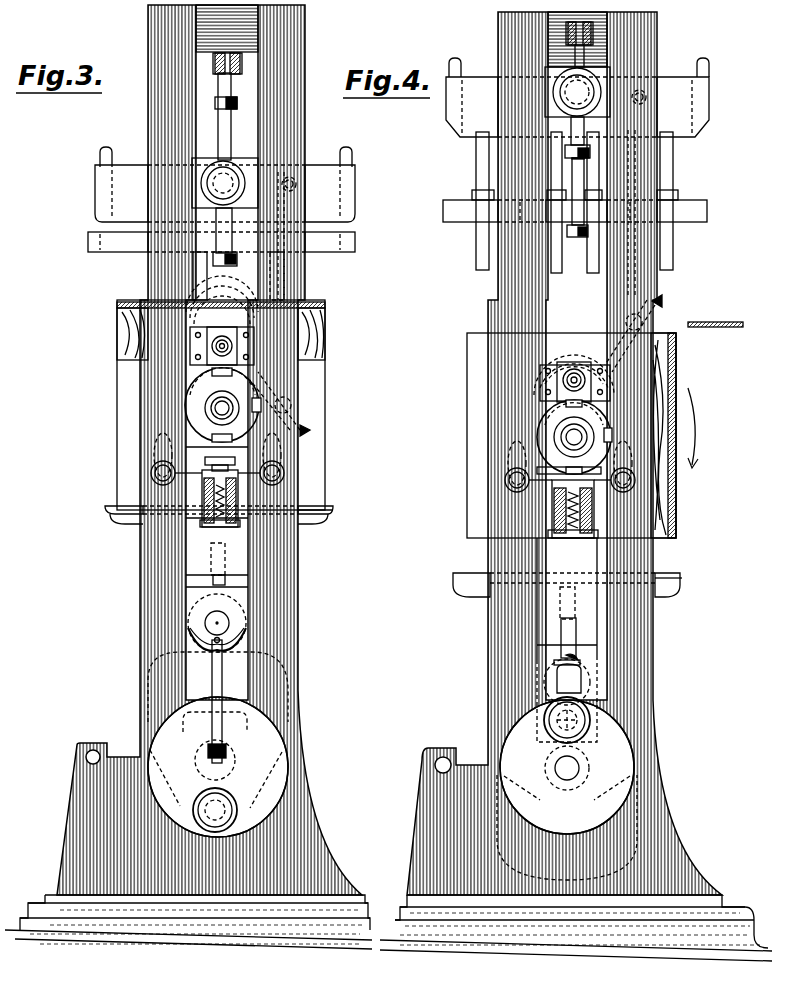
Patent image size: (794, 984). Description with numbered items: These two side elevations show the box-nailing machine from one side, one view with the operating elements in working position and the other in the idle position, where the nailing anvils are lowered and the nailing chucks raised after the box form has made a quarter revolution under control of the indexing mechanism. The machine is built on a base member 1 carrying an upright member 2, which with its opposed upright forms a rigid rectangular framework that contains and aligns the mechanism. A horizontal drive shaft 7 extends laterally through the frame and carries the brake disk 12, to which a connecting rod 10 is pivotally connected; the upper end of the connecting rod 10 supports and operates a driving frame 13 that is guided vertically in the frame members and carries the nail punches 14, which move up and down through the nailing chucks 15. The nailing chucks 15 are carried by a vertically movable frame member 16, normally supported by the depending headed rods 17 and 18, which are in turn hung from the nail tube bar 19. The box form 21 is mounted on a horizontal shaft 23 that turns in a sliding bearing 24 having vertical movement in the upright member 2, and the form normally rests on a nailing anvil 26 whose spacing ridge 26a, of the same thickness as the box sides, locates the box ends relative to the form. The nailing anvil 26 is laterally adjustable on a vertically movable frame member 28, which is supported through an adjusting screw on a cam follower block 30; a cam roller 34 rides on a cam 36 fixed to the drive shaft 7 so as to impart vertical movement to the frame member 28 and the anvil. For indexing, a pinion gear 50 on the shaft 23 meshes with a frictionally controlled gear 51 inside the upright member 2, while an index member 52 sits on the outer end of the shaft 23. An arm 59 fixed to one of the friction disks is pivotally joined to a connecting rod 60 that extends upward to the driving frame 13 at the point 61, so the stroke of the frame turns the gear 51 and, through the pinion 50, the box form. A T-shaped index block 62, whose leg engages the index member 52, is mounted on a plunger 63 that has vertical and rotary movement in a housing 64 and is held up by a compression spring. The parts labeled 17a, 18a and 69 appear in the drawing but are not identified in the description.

In FIG. 3, the base member 1 is at (50, 908).
In FIG. 4, the base member 1 is at (712, 932).
In FIG. 3, the upright member 2 is at (165, 651).
In FIG. 4, the upright member 2 is at (510, 653).
In FIG. 4, the horizontal drive shaft 7 is at (580, 768).
In FIG. 3, the connecting rod 10 is at (218, 683).
In FIG. 4, the connecting rod 10 is at (584, 171).
In FIG. 3, the brake disk 12 is at (172, 748).
In FIG. 4, the brake disk 12 is at (522, 757).
In FIG. 3, the driving frame 13 is at (118, 197).
In FIG. 4, the driving frame 13 is at (472, 105).
In FIG. 4, the nail punches 14 is at (476, 166).
In FIG. 3, the nailing chucks 15 is at (205, 286).
In FIG. 4, the nailing chucks 15 is at (551, 258).
In FIG. 3, the frame member 16 is at (105, 241).
In FIG. 4, the frame member 16 is at (447, 213).
In FIG. 3, the headed rod 17 is at (225, 130).
In FIG. 4, the headed rod 17 is at (584, 188).
In FIG. 3, the collar 17a is at (215, 104).
In FIG. 3, the headed rod 18 is at (225, 183).
In FIG. 4, the bearing block 18a is at (552, 70).
In FIG. 3, the nail tube bar 19 is at (242, 68).
In FIG. 4, the nail tube bar 19 is at (562, 36).
In FIG. 3, the box form 21 is at (127, 466).
In FIG. 4, the box form 21 is at (475, 502).
In FIG. 3, the horizontal shaft 23 is at (215, 410).
In FIG. 4, the horizontal shaft 23 is at (567, 440).
In FIG. 4, the sliding bearing 24 is at (540, 473).
In FIG. 3, the nailing anvil 26 is at (125, 517).
In FIG. 4, the nailing anvil 26 is at (478, 587).
In FIG. 3, the spacing ridge 26a is at (320, 511).
In FIG. 4, the spacing ridge 26a is at (672, 578).
In FIG. 3, the frame member 28 is at (210, 560).
In FIG. 4, the frame member 28 is at (556, 617).
In FIG. 3, the cam follower block 30 is at (238, 594).
In FIG. 4, the cam follower block 30 is at (590, 663).
In FIG. 3, the cam roller 34 is at (240, 641).
In FIG. 4, the cam roller 34 is at (590, 704).
In FIG. 3, the cam 36 is at (197, 692).
In FIG. 4, the cam 36 is at (640, 813).
In FIG. 4, the pinion gear 50 is at (556, 425).
In FIG. 4, the frictionally controlled gear 51 is at (560, 343).
In FIG. 3, the index member 52 is at (195, 396).
In FIG. 4, the index member 52 is at (550, 410).
In FIG. 3, the arm 59 is at (312, 431).
In FIG. 4, the arm 59 is at (664, 301).
In FIG. 3, the connecting rod 60 is at (290, 286).
In FIG. 4, the connecting rod 60 is at (640, 285).
In FIG. 3, the pivot point 61 is at (294, 180).
In FIG. 4, the pivot point 61 is at (645, 92).
In FIG. 3, the index block 62 is at (232, 460).
In FIG. 4, the index block 62 is at (634, 479).
In FIG. 3, the plunger 63 is at (265, 473).
In FIG. 4, the plunger 63 is at (622, 489).
In FIG. 3, the housing 64 is at (202, 481).
In FIG. 4, the housing 64 is at (552, 482).
In FIG. 3, the bracket 69 is at (237, 345).
In FIG. 4, the bracket 69 is at (548, 372).